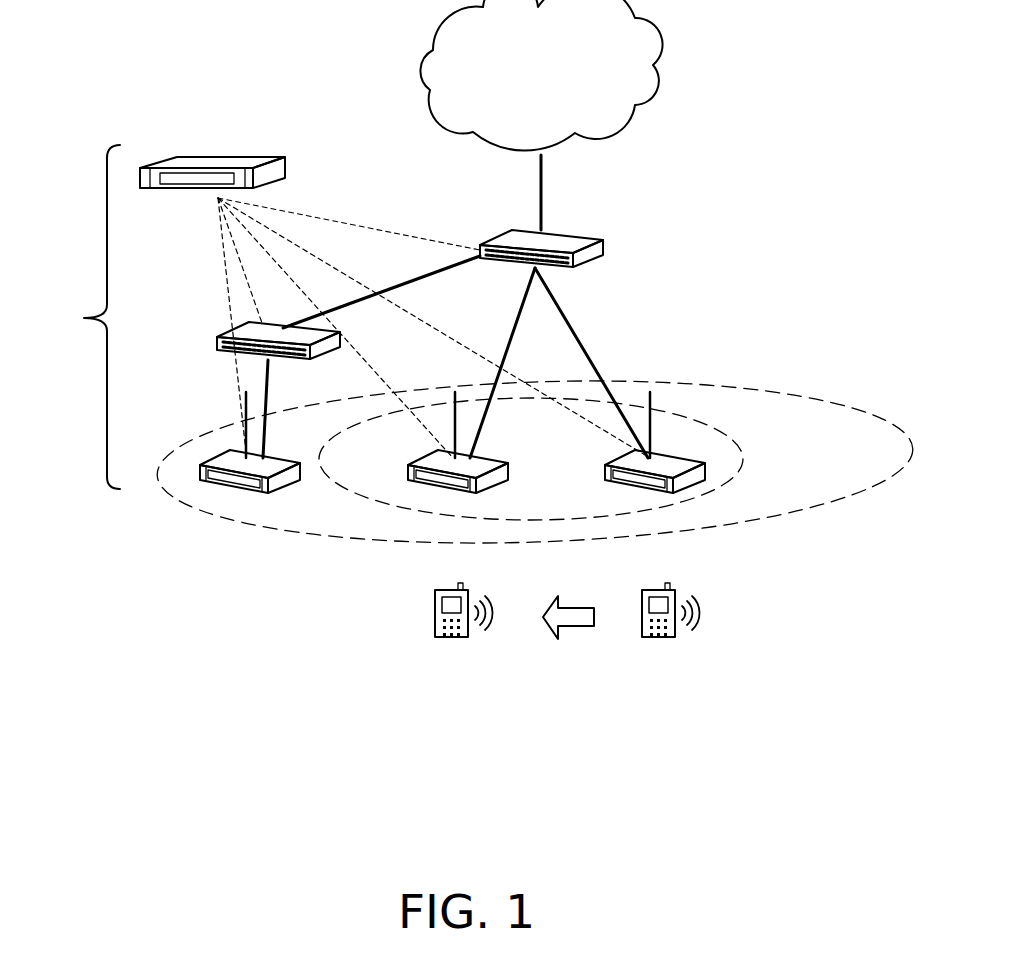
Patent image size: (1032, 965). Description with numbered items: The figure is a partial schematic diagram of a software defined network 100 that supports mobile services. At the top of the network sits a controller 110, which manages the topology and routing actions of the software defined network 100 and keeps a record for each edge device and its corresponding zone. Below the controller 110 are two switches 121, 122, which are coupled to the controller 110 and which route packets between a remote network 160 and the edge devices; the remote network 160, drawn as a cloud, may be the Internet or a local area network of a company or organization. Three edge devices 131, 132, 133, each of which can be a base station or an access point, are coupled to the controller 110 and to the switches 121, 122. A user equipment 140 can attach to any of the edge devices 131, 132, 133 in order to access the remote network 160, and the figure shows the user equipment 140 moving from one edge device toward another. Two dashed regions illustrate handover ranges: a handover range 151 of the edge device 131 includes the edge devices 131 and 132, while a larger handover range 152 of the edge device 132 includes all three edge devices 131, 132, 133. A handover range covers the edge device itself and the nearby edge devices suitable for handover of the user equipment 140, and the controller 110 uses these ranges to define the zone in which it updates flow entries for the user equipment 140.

The software defined network 100 is at (78, 317).
The controller 110 is at (228, 158).
The switch 121 is at (583, 236).
The switch 122 is at (225, 336).
The edge device 131 is at (688, 463).
The edge device 132 is at (493, 463).
The edge device 133 is at (290, 487).
The user equipment 140 is at (452, 640).
The handover range 151 is at (763, 523).
The handover range 152 is at (327, 538).
The remote network 160 is at (655, 30).